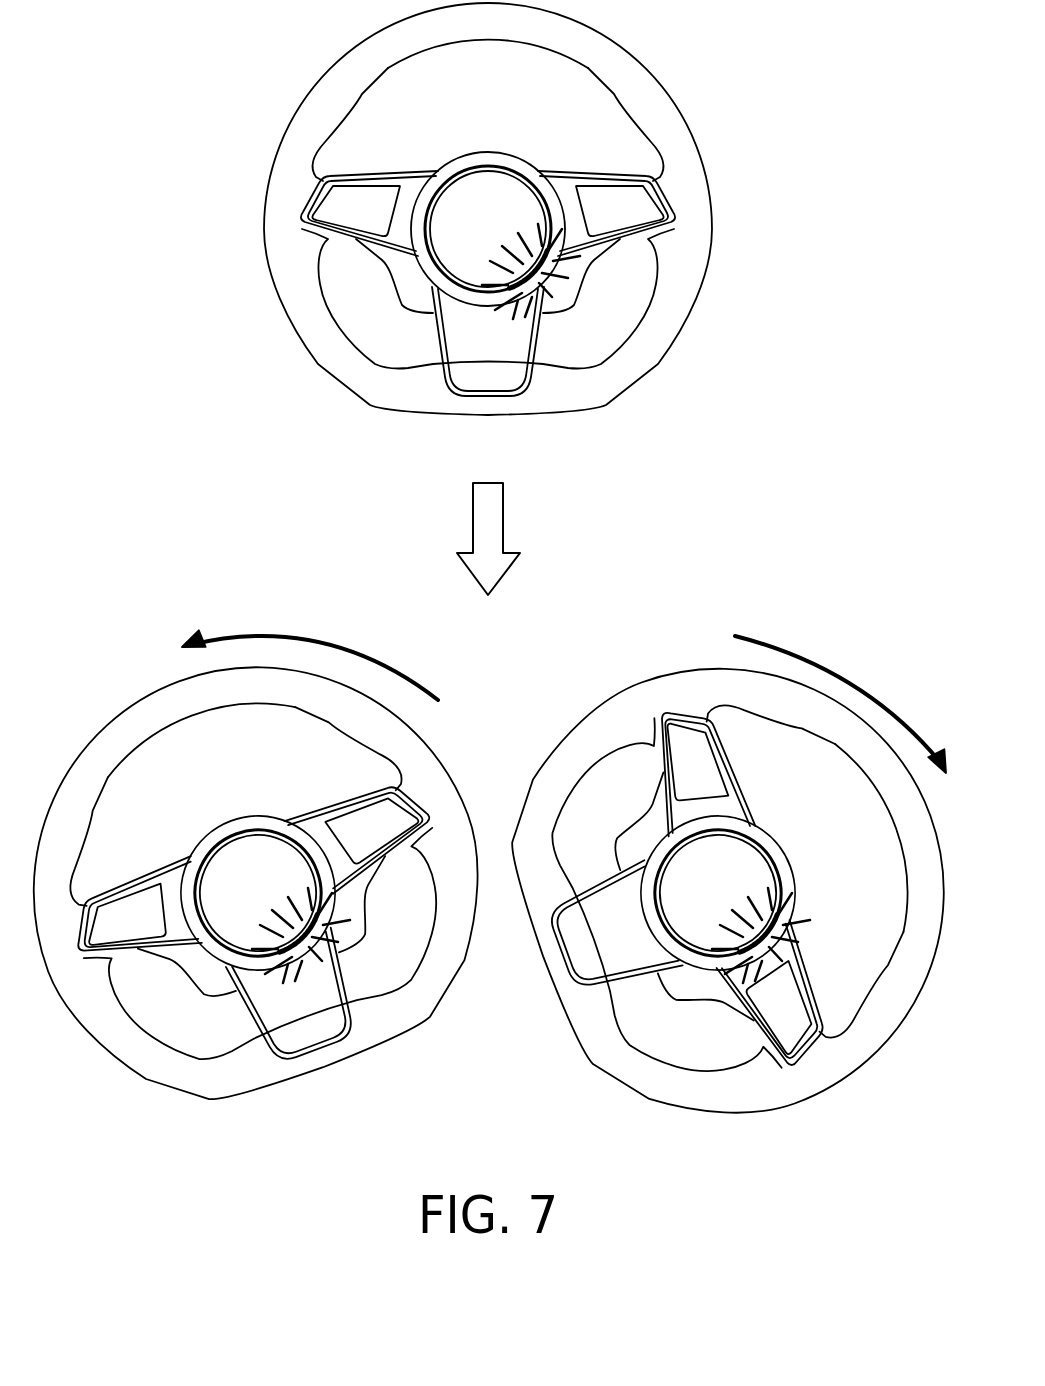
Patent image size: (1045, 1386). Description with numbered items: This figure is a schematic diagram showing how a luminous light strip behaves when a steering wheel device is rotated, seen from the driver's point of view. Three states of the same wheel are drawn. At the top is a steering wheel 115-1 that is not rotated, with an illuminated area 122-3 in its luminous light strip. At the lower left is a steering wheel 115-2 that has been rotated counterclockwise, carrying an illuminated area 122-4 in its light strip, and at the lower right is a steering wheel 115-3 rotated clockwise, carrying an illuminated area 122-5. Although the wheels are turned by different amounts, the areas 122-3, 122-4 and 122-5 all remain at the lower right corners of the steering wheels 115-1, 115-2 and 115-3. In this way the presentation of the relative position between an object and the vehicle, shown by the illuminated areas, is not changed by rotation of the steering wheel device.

The steering wheel 115-1 is at (689, 263).
The area in the luminous light strip 122-3 is at (567, 277).
The steering wheel 115-2 is at (140, 1055).
The area in the luminous light strip 122-4 is at (337, 942).
The steering wheel 115-3 is at (860, 1055).
The area in the luminous light strip 122-5 is at (771, 952).